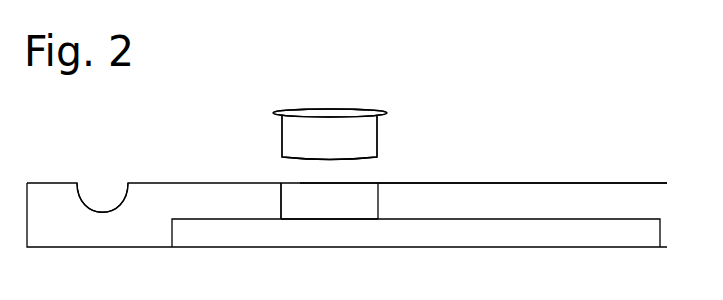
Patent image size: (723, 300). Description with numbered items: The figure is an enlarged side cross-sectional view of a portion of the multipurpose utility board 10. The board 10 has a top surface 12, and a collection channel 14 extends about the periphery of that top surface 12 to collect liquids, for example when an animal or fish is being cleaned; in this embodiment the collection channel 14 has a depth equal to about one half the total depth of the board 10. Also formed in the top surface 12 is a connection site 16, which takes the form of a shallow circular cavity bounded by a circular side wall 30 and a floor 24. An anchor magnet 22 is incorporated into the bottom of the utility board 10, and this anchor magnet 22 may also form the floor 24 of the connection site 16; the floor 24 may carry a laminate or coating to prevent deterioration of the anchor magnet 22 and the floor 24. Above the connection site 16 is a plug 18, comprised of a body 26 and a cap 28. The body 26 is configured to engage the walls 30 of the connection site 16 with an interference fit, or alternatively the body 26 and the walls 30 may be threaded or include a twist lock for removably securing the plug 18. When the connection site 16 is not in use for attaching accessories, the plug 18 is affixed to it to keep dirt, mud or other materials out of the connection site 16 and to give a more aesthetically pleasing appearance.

The utility board 10 is at (643, 212).
The top surface 12 is at (525, 181).
The collection channel 14 is at (103, 197).
The connection site 16 is at (338, 188).
The plug 18 is at (395, 102).
The anchor magnet 22 is at (442, 235).
The floor 24 is at (307, 219).
The body 26 is at (338, 149).
The cap 28 is at (322, 113).
The side wall 30 is at (282, 194).